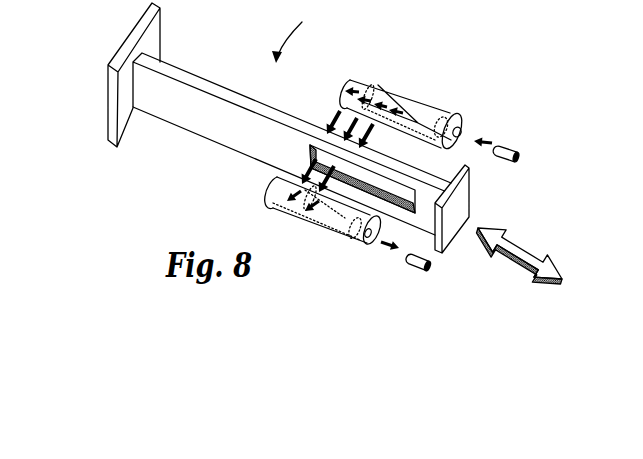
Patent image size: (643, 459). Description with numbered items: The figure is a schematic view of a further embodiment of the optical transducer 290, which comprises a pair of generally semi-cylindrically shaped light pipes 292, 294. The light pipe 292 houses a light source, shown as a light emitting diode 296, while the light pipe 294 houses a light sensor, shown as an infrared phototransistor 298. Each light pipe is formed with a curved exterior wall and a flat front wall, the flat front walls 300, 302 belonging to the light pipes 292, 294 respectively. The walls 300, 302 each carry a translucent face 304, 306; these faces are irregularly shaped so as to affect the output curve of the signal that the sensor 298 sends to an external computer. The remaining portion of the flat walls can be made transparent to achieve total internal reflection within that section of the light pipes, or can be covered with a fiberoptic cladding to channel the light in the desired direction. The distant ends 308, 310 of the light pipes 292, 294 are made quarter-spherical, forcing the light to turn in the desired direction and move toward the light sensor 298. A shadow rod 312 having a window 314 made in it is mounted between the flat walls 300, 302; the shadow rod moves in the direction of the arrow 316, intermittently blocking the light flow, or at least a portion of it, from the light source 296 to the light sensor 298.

The transducer 290 is at (297, 31).
The light pipe 292 is at (435, 106).
The light pipe 294 is at (313, 228).
The light emitting diode 296 is at (516, 152).
The infrared phototransistor 298 is at (410, 263).
The flat front wall 300 is at (426, 143).
The flat front wall 302 is at (414, 254).
The translucent face 304 is at (378, 85).
The translucent face 306 is at (275, 196).
The distant end 308 is at (350, 79).
The distant end 310 is at (268, 182).
The shadow rod 312 is at (201, 78).
The window 314 is at (405, 191).
The arrow 316 is at (516, 265).